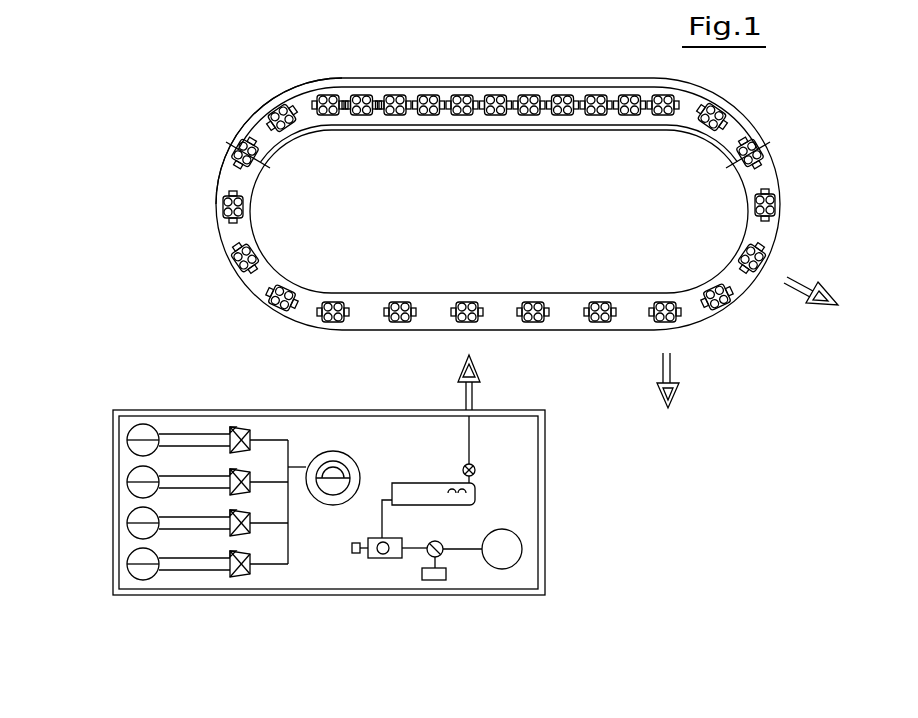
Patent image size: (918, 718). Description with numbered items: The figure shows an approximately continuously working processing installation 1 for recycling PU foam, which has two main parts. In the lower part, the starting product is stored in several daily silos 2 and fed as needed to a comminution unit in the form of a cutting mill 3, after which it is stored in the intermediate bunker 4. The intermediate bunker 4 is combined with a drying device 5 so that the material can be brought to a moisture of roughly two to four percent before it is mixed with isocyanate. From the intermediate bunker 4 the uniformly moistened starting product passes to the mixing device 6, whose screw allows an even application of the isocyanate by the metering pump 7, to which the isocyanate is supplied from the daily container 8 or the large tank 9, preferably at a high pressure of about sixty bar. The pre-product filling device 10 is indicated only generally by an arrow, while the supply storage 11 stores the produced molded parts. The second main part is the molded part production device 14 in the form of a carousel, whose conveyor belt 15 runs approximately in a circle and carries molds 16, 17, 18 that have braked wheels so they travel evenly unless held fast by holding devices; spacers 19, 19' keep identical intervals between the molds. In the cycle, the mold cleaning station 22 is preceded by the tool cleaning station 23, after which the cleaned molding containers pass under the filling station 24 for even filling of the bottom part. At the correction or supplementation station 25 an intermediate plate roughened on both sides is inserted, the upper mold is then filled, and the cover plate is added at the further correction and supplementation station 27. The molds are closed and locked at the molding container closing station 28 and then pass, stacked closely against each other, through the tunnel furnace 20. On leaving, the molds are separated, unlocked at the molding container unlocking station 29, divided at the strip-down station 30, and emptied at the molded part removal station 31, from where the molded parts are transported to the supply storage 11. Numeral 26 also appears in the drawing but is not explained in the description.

The processing installation 1 is at (152, 352).
The daily silos 2 is at (142, 530).
The cutting mill 3 is at (236, 578).
The intermediate bunker 4 is at (334, 482).
The drying device 5 is at (338, 478).
The mixing device 6 is at (428, 493).
The metering pump 7 is at (383, 558).
The daily container 8 is at (435, 580).
The large tank 9 is at (522, 549).
The pre-product filling device 10 is at (482, 368).
The supply storage 11 is at (752, 507).
The molded part production device 14 is at (172, 184).
The conveyor belt 15 is at (300, 318).
The mold 16 is at (268, 305).
The mold 17 is at (222, 212).
The mold 18 is at (363, 100).
The spacer 19 is at (404, 58).
The spacer 19' is at (322, 58).
The tunnel furnace 20 is at (552, 87).
The mold cleaning station 22 is at (537, 300).
The tool cleaning station 23 is at (603, 300).
The filling station 24 is at (485, 300).
The correction or supplementation station 25 is at (403, 300).
The carrier 26 is at (340, 300).
The correction and supplementation station 27 is at (256, 252).
The molding container closing station 28 is at (244, 206).
The molding container unlocking station 29 is at (748, 205).
The strip-down station 30 is at (811, 308).
The molded part removal station 31 is at (675, 396).